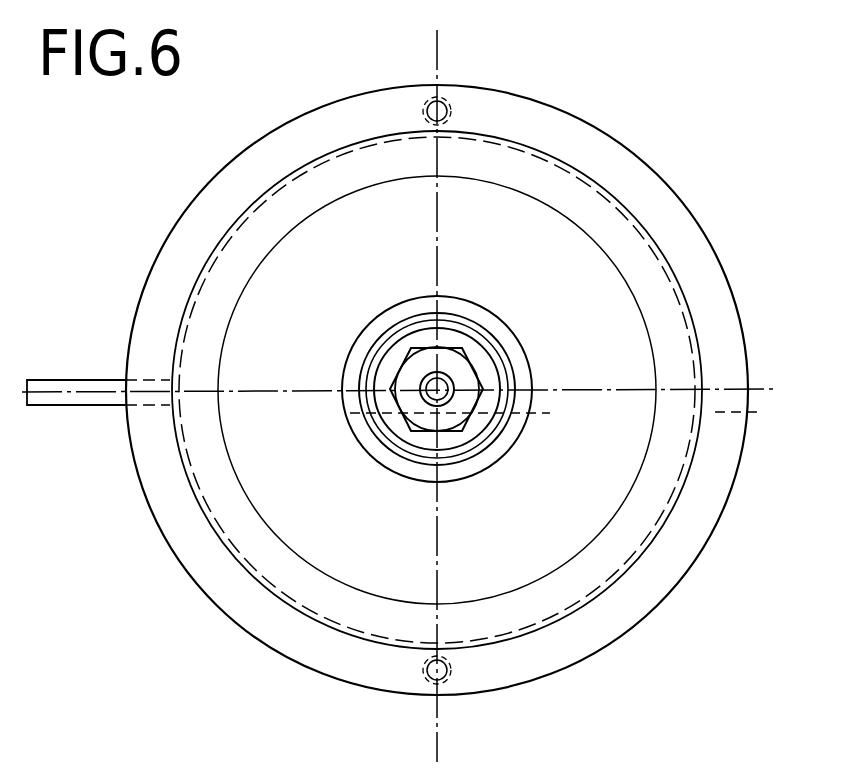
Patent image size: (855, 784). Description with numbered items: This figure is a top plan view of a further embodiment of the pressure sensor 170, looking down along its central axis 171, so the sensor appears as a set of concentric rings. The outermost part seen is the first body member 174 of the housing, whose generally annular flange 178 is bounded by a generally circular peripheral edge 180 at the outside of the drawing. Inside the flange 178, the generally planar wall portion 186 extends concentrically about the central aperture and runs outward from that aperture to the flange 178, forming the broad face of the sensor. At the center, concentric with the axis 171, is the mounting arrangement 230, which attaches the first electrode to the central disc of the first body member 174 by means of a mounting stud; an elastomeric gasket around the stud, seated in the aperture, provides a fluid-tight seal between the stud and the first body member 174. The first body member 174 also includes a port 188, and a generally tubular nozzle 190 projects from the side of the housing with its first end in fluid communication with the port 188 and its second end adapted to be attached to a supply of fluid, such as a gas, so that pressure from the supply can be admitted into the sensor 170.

The pressure sensor 170 is at (645, 95).
The first body member 174 is at (620, 177).
The circular peripheral edge 180 is at (692, 213).
The annular flange 178 is at (703, 272).
The planar wall portion 186 is at (628, 348).
The port 188 is at (175, 384).
The tubular nozzle 190 is at (77, 378).
The mounting arrangement 230 is at (500, 336).
The central axis 171 is at (442, 394).